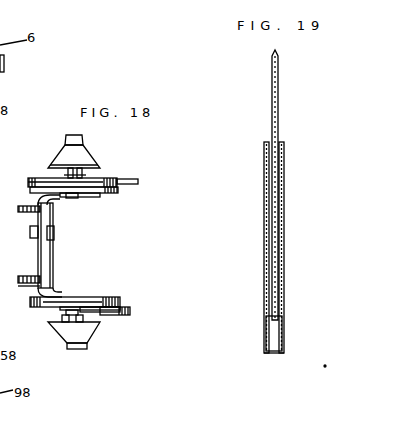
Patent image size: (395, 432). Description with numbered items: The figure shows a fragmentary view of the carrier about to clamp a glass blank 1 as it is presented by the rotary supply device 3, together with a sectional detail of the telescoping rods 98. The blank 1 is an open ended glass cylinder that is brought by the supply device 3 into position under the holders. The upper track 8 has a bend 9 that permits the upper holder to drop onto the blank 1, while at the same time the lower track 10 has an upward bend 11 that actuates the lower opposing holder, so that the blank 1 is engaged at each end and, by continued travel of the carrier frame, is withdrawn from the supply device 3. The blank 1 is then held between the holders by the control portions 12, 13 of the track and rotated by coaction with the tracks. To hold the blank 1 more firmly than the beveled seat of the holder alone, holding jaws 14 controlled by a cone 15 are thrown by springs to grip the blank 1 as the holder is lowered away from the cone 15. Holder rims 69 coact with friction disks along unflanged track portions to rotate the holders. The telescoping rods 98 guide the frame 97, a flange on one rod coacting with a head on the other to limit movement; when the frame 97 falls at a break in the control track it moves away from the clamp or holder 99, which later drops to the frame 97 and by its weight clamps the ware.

In FIG. 18, the blank 1 is at (54, 244).
In FIG. 18, the rotary supply device 3 is at (54, 232).
In FIG. 18, the track 8 is at (117, 179).
In FIG. 18, the bend 9 is at (56, 197).
In FIG. 18, the lower track 10 is at (130, 312).
In FIG. 18, the upward bend 11 is at (56, 290).
In FIG. 18, the control portion 12 is at (31, 212).
In FIG. 18, the control portion 13 is at (32, 277).
In FIG. 18, the holding jaws 14 is at (76, 180).
In FIG. 18, the cone 15 is at (97, 161).
In FIG. 18, the holder rim 69 is at (122, 187).
In FIG. 18, the frame 97 is at (104, 192).
In FIG. 18, the holder 99 is at (118, 190).
In FIG. 19, the telescoping rods 98 is at (284, 168).